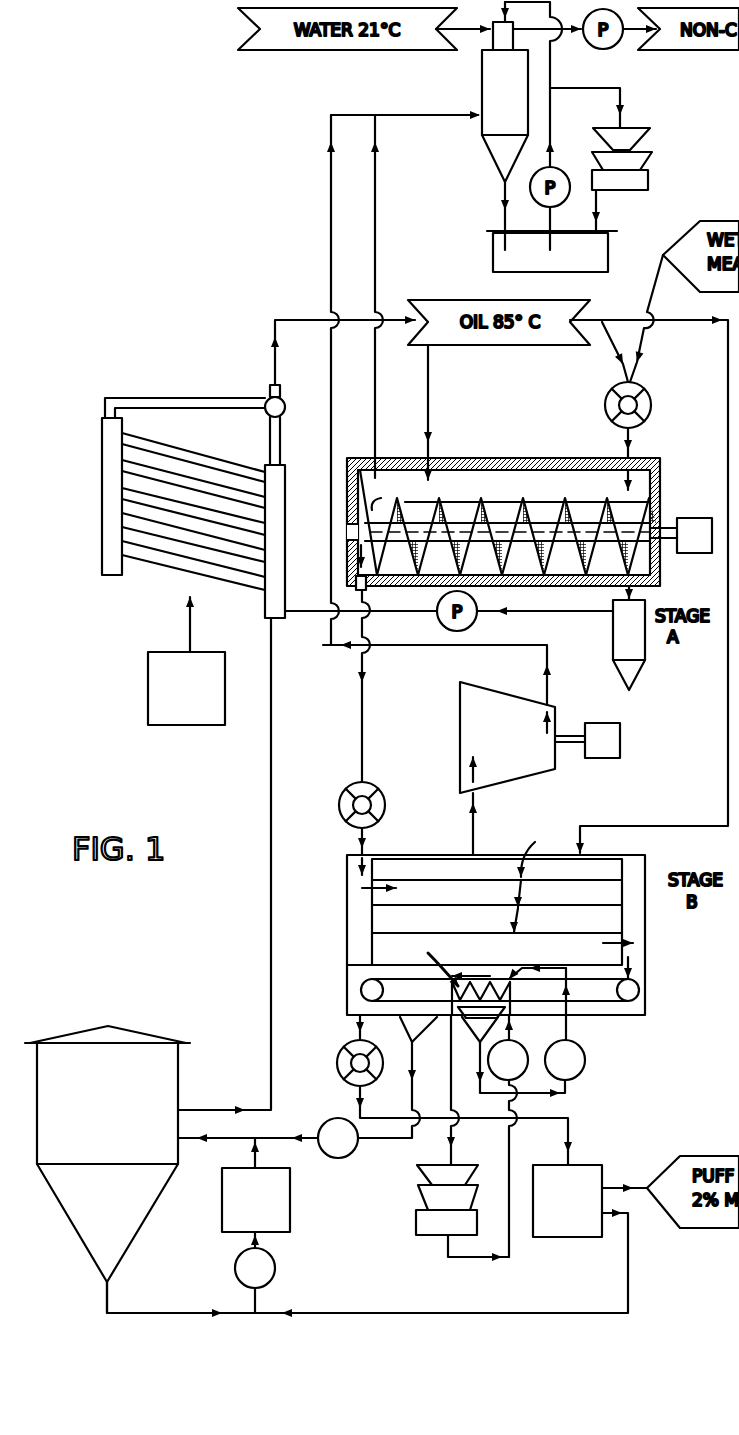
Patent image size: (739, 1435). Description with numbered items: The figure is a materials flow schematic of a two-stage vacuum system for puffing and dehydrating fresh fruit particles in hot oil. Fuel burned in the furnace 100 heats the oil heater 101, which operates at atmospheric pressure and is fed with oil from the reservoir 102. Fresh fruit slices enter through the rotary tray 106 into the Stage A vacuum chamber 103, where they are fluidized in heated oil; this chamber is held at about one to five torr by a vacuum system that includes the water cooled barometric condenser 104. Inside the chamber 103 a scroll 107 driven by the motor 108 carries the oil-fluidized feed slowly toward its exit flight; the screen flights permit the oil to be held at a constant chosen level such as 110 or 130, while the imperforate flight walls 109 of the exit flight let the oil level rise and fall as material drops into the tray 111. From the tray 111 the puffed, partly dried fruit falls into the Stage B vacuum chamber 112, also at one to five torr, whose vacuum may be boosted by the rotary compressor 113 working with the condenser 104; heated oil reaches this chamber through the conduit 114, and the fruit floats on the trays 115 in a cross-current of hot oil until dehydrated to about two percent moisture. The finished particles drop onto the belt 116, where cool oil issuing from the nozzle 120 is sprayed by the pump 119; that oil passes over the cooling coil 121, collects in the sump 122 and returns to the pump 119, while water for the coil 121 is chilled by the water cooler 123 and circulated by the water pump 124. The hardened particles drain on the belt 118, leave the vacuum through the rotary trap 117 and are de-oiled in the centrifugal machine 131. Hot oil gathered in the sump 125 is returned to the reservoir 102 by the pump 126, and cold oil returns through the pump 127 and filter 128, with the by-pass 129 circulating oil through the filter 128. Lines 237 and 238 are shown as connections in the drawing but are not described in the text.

The furnace 100 is at (150, 685).
The oil heater 101 is at (112, 494).
The reservoir 102 is at (179, 1081).
The Stage A vacuum chamber 103 is at (534, 503).
The water cooled barometric condenser 104 is at (483, 95).
The rotary tray 106 is at (654, 403).
The scroll 107 is at (508, 522).
The motor 108 is at (694, 513).
The flight walls 109 is at (381, 533).
The oil level 110 is at (451, 500).
The tray 111 is at (378, 784).
The Stage B vacuum chamber 112 is at (409, 853).
The rotary compressor 113 is at (512, 781).
The conduit 114 is at (429, 412).
The trays 115 is at (541, 877).
The belt 116 is at (553, 982).
The rotary trap 117 is at (370, 1042).
The belt 118 is at (430, 982).
The pump 119 is at (588, 1063).
The nozzle 120 is at (503, 965).
The cooling coil 121 is at (426, 964).
The sump 122 is at (472, 1090).
The water cooler 123 is at (420, 1195).
The water pump 124 is at (524, 1052).
The sump 125 is at (403, 1077).
The pump 126 is at (342, 1158).
The pump 127 is at (278, 1270).
The filter 128 is at (288, 1205).
The by-pass 129 is at (140, 1310).
The oil level 130 is at (521, 520).
The centrifugal machine 131 is at (590, 1165).
The vapor line 237 is at (374, 412).
The vapor return line 238 is at (477, 847).